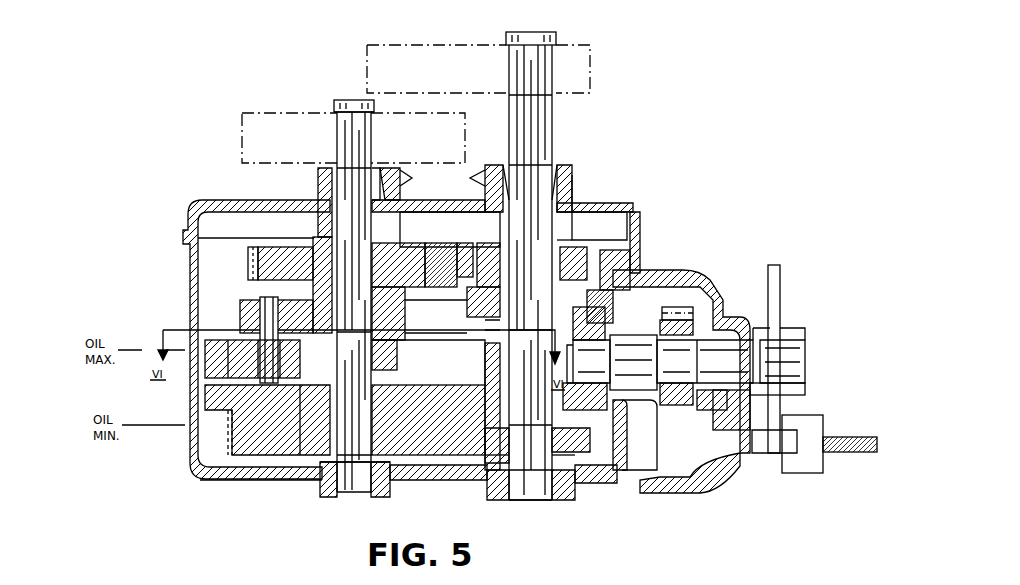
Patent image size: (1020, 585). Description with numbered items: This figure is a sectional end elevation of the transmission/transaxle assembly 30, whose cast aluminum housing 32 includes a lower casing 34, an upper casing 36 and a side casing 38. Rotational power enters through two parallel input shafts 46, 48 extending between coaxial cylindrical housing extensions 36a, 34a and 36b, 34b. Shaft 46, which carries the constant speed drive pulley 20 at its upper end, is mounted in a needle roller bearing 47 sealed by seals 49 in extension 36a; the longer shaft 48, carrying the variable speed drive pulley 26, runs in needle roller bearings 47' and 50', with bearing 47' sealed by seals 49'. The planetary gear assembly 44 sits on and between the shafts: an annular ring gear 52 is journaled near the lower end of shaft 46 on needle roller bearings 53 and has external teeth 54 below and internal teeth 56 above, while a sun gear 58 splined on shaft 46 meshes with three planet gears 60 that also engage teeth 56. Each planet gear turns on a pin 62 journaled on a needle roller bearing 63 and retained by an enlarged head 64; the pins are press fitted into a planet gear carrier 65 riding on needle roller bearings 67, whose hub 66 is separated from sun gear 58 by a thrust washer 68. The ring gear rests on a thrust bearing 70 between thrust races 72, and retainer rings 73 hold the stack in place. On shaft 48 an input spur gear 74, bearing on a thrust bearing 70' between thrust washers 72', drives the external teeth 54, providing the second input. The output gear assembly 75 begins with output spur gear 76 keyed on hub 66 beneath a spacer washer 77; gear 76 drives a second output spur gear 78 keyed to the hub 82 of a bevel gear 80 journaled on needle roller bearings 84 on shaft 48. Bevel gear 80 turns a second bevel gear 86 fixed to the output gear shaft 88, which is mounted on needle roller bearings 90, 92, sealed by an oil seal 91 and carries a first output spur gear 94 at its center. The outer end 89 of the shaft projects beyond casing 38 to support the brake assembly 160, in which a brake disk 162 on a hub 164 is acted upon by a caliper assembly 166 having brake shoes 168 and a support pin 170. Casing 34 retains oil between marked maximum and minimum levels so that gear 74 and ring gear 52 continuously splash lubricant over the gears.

The drive pulley 20 is at (258, 133).
The drive pulley 26 is at (468, 48).
The transmission/transaxle assembly 30 is at (685, 148).
The housing 32 is at (186, 262).
The lower casing 34 is at (207, 482).
The housing extension 34a is at (322, 494).
The housing extension 34b is at (570, 497).
The upper casing 36 is at (618, 205).
The housing extension 36a is at (322, 182).
The housing extension 36b is at (570, 180).
The side casing 38 is at (690, 282).
The planetary gear assembly 44 is at (215, 300).
The input shaft 46 is at (338, 105).
The needle roller bearing 47 is at (297, 258).
The needle roller bearing 47' is at (592, 192).
The input shaft 48 is at (548, 128).
The seals 49 is at (416, 179).
The seals 49' is at (466, 179).
The needle roller bearing 50' is at (540, 515).
The ring gear 52 is at (440, 476).
The needle roller bearings 53 is at (395, 400).
The external teeth 54 is at (228, 438).
The internal teeth 56 is at (478, 362).
The sun gear 58 is at (400, 352).
The planet gears 60 is at (242, 360).
The pin 62 is at (262, 318).
The needle roller bearing 63 is at (312, 385).
The enlarged head 64 is at (248, 395).
The planet gear carrier 65 is at (244, 304).
The hub 66 is at (312, 250).
The needle roller bearings 67 is at (422, 255).
The thrust washer 68 is at (478, 316).
The thrust bearing 70 is at (331, 464).
The thrust bearing 70' is at (479, 463).
The thrust races 72 is at (398, 302).
The thrust washers 72' is at (583, 462).
The retainer rings 73 is at (335, 168).
The input spur gear 74 is at (580, 441).
The output gear assembly 75 is at (615, 255).
The output spur gear 76 is at (270, 252).
The spacer washer 77 is at (402, 243).
The output spur gear 78 is at (622, 250).
The bevel gear 80 is at (470, 298).
The hub 82 is at (600, 240).
The needle roller bearings 84 is at (627, 260).
The bevel gear 86 is at (635, 435).
The output gear shaft 88 is at (726, 369).
The outer end 89 is at (797, 360).
The needle roller bearing 90 is at (680, 405).
The oil seal 91 is at (745, 325).
The needle roller bearing 92 is at (712, 415).
The output spur gear 94 is at (700, 315).
The brake assembly 160 is at (808, 326).
The brake disk 162 is at (781, 270).
The hub 164 is at (806, 390).
The caliper assembly 166 is at (805, 468).
The brake shoes 168 is at (772, 456).
The support pin 170 is at (860, 438).